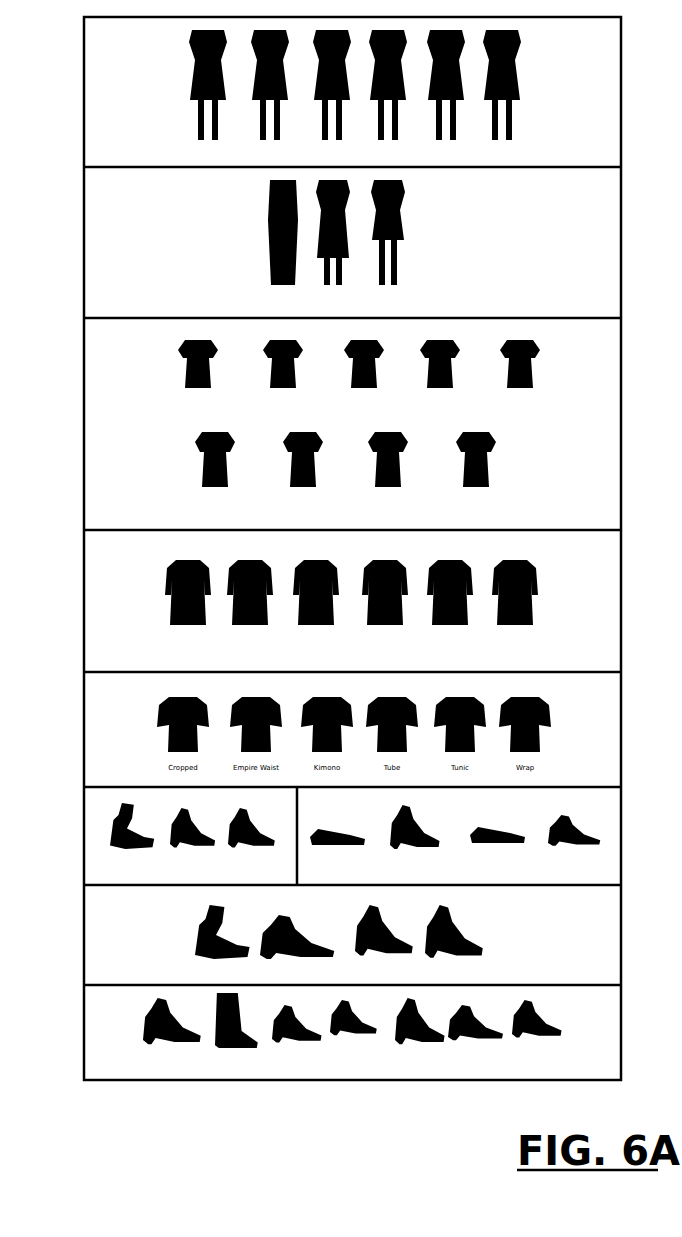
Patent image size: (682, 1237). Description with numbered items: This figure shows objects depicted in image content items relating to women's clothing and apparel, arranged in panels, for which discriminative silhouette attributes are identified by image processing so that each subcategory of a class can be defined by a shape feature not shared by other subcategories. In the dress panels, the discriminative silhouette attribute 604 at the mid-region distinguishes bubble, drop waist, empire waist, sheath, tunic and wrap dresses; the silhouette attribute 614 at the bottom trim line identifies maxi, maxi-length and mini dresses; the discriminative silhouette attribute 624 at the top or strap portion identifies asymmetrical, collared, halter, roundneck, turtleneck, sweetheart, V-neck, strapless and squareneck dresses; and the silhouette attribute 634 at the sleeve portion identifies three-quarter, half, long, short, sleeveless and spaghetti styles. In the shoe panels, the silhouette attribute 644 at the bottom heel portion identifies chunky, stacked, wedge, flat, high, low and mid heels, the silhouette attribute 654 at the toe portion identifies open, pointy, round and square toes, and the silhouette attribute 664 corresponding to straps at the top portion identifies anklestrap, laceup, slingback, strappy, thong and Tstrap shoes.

The discriminative silhouette attribute 604 is at (190, 84).
The silhouette attribute 614 is at (262, 247).
The discriminative silhouette attribute 624 is at (200, 443).
The silhouette attribute 634 is at (168, 572).
The silhouette attribute 644 is at (110, 833).
The silhouette attribute 654 is at (197, 943).
The silhouette attribute 664 is at (145, 1004).